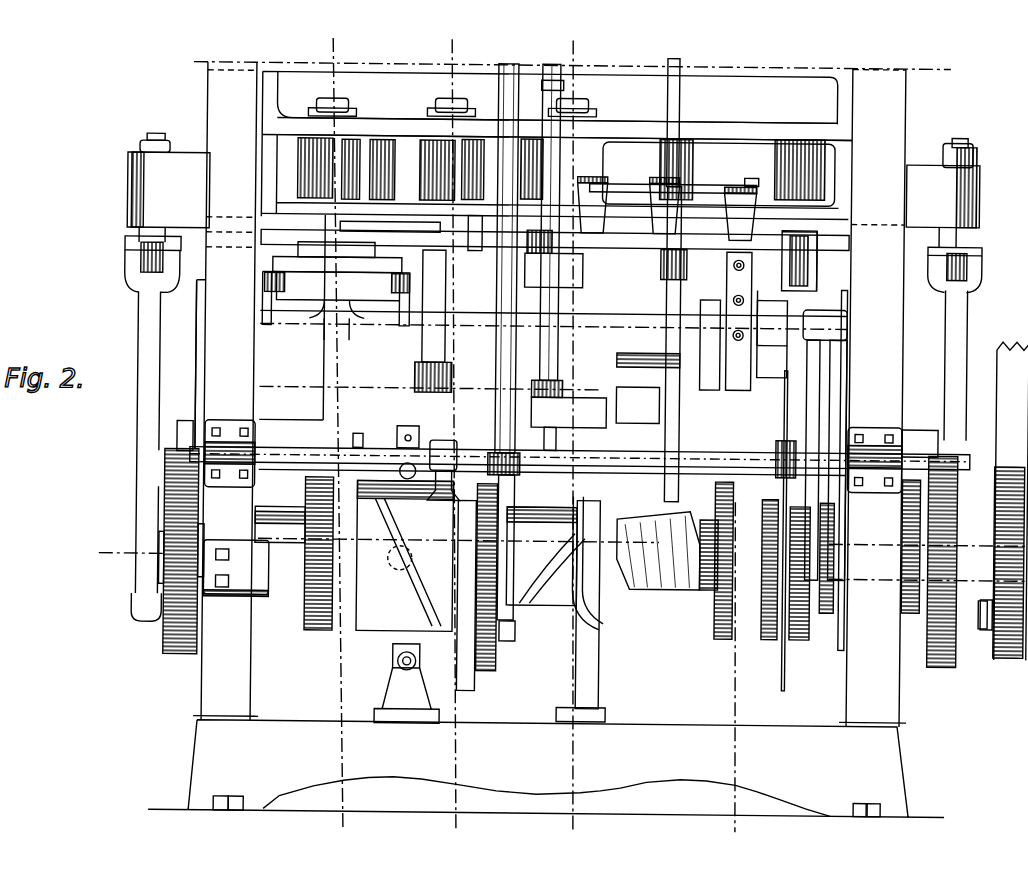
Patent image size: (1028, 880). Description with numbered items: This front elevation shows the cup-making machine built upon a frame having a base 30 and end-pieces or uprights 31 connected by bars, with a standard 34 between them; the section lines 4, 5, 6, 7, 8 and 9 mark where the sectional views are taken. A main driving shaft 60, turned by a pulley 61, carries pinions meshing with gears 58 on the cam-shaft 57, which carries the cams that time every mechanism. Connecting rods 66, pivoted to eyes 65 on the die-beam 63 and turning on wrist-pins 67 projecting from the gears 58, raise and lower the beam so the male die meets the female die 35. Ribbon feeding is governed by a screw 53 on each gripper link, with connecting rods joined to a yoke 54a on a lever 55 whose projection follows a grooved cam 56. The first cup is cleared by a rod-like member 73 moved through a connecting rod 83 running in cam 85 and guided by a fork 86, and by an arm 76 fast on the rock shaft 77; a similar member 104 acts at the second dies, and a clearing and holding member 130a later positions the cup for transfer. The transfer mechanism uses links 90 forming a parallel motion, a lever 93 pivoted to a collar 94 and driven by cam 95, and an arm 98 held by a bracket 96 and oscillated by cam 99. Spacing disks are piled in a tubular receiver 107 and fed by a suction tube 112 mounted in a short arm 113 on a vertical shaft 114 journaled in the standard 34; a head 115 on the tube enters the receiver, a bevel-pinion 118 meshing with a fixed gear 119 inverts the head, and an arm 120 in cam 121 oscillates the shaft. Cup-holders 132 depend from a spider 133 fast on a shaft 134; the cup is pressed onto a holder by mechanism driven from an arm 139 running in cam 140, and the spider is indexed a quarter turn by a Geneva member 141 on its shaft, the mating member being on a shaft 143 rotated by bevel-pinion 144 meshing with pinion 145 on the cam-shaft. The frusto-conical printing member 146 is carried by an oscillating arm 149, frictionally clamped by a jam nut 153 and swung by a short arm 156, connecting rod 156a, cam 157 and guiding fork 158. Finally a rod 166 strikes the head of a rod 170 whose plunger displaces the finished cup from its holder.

The section line 4— 4 is at (335, 423).
The section line 5— 5 is at (449, 424).
The section line 6— 6 is at (570, 426).
The section line 7— 7 is at (705, 432).
The base 30 is at (901, 778).
The end-pieces or uprights 31 is at (553, 394).
The standard 34 is at (601, 679).
The female die 35 is at (403, 284).
The adjustable contact member 53 is at (292, 317).
The yoke 54a is at (139, 286).
The lever 55 is at (320, 416).
The cam 56 is at (307, 634).
The cam-shaft 57 is at (164, 556).
The gears 58 is at (176, 656).
The main driving shaft 60 is at (1010, 655).
The pulley 61 is at (988, 627).
The beam 63 is at (749, 126).
The eyes 65 is at (123, 246).
The connecting rods 66 is at (137, 346).
The wrist-pins 67 is at (139, 617).
The clearing member 73 is at (342, 102).
The arm 76 is at (355, 442).
The shaft 77 is at (476, 448).
The connecting rod 83 is at (515, 112).
The cam 85 is at (495, 672).
The fork 86 is at (498, 602).
The links 90 is at (197, 383).
The lever 93 is at (396, 654).
The collar 94 is at (399, 432).
The cam 95 is at (461, 663).
The bracket 96 is at (893, 426).
The arm 98 is at (983, 442).
The cam 99 is at (911, 610).
The clearing and supporting member 104 is at (437, 86).
The tubular receiver 107 is at (438, 353).
The tube 112 is at (478, 232).
The short arm 113 is at (647, 204).
The vertical shaft 114 is at (558, 139).
The head 115 is at (427, 230).
The bevel-pinion 118 is at (543, 279).
The gear 119 is at (570, 246).
The arm 120 is at (587, 599).
The cam 121 is at (558, 606).
The clearing and holding member 130a is at (558, 86).
The holder 132 is at (595, 199).
The spider 133 is at (697, 183).
The shaft 134 is at (720, 298).
The arm 139 is at (716, 614).
The cam 140 is at (763, 639).
The Geneva member 141 is at (628, 354).
The shaft 143 is at (678, 392).
The bevel-pinion 144 is at (641, 573).
The bevel-pinion 145 is at (701, 580).
The printing member 146 is at (742, 208).
The oscillating arm 149 is at (815, 260).
The jam nut 153 is at (788, 340).
The short arm 156 is at (846, 319).
The connecting rod 156a is at (819, 357).
The cam 157 is at (806, 639).
The fork 158 is at (835, 591).
The rod 166 is at (676, 99).
The rod 170 is at (749, 176).
The section line 8— 8 is at (784, 408).
The section line 9— 9 is at (835, 480).